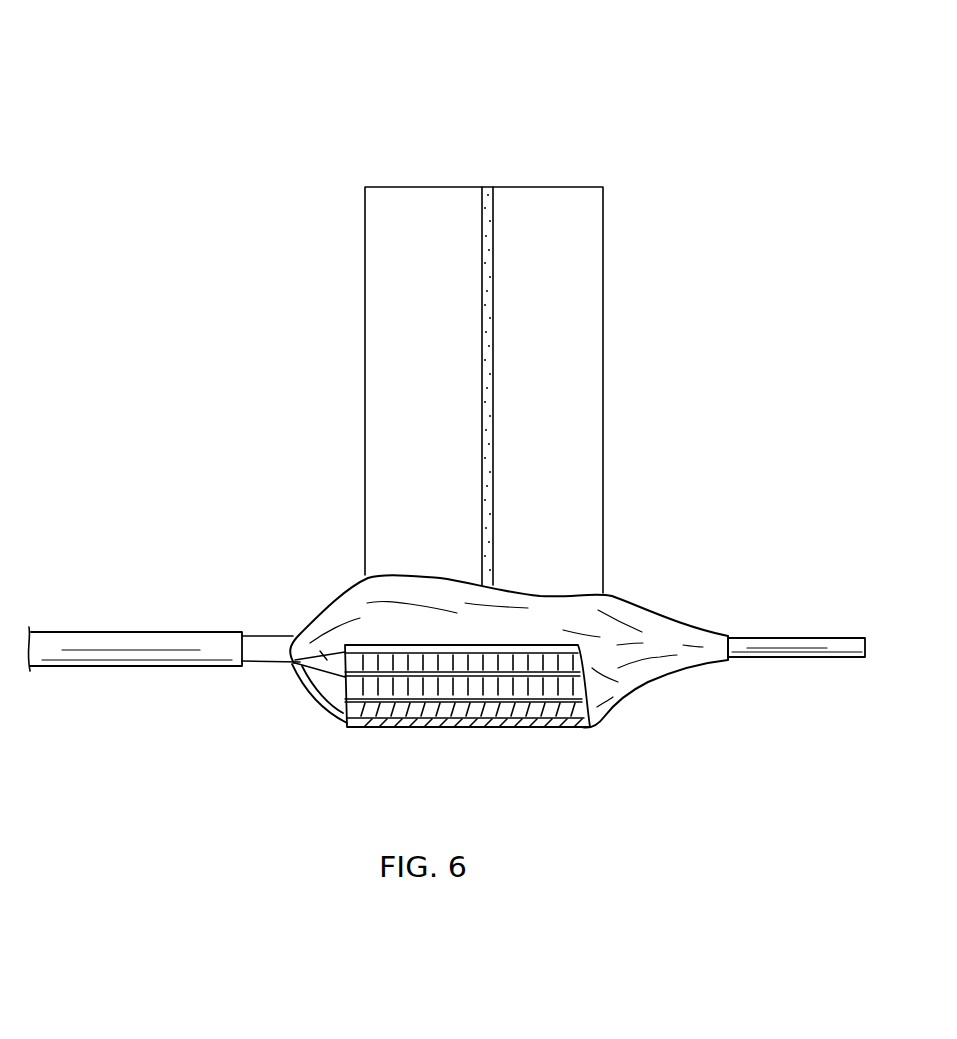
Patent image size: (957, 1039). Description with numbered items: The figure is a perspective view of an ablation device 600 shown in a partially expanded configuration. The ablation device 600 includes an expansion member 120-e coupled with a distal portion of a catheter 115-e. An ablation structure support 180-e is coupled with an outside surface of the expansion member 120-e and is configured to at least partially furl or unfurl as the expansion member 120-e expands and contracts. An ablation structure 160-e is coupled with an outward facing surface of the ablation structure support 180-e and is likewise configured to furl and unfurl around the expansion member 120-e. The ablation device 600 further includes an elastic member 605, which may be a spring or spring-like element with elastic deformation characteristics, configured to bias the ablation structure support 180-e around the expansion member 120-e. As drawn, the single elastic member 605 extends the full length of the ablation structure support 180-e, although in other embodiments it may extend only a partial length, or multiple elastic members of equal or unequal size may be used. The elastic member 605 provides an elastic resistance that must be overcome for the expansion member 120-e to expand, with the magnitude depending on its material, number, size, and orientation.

The ablation device 600 is at (272, 87).
The ablation structure support 180-e is at (365, 214).
The elastic member 605 is at (486, 333).
The catheter 115-e is at (165, 632).
The expansion member 120-e is at (652, 620).
The ablation structure 160-e is at (362, 713).